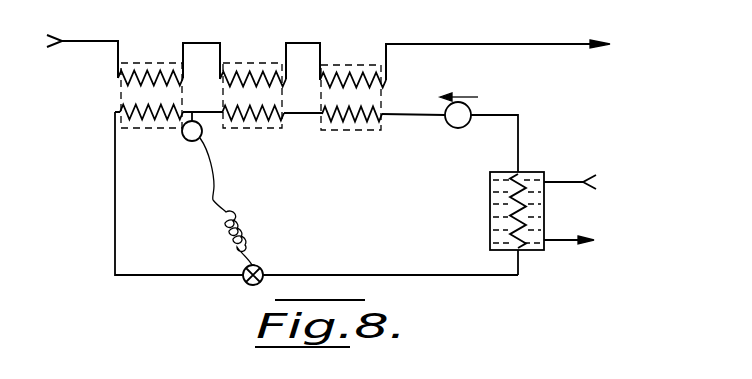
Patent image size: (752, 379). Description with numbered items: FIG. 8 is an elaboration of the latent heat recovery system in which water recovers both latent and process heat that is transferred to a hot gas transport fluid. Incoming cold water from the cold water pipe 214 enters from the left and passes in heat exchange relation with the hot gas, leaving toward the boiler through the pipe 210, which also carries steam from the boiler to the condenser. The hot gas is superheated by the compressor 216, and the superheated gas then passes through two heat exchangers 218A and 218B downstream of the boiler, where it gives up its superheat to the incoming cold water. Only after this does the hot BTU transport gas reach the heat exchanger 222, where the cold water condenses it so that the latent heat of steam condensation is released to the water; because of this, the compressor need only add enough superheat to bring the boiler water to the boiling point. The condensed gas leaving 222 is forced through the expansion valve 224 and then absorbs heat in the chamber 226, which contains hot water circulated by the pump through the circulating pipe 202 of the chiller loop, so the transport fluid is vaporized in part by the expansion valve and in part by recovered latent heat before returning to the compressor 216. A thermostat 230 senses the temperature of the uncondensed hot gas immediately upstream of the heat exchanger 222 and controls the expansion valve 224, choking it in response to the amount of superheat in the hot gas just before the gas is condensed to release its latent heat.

The cold water pipe 214 is at (77, 41).
The pipe 210 is at (530, 44).
The heat exchanger 222 is at (118, 88).
The heat exchanger 218B is at (254, 133).
The heat exchanger 218A is at (352, 133).
The compressor 216 is at (455, 129).
The chamber 226 is at (490, 206).
The circulating pipe 202 is at (565, 182).
The thermostat 230 is at (187, 143).
The expansion valve 224 is at (248, 282).